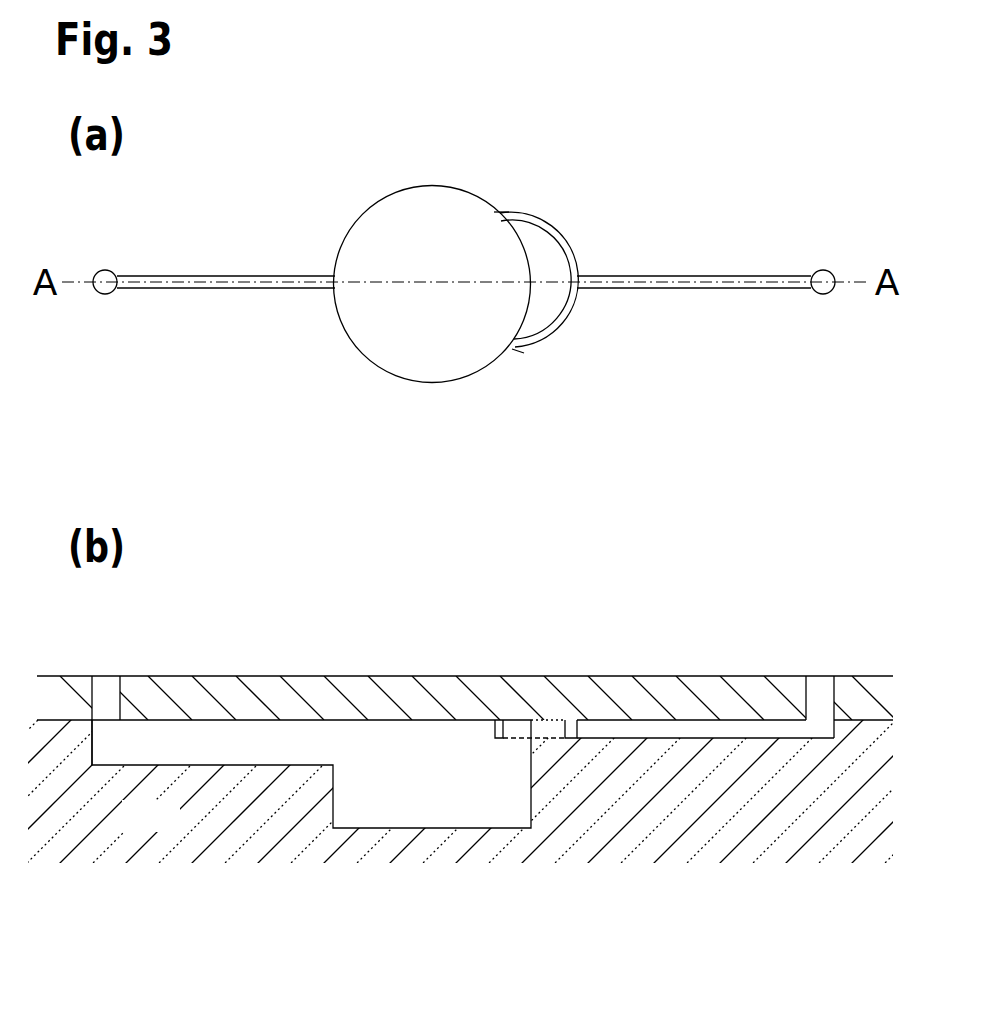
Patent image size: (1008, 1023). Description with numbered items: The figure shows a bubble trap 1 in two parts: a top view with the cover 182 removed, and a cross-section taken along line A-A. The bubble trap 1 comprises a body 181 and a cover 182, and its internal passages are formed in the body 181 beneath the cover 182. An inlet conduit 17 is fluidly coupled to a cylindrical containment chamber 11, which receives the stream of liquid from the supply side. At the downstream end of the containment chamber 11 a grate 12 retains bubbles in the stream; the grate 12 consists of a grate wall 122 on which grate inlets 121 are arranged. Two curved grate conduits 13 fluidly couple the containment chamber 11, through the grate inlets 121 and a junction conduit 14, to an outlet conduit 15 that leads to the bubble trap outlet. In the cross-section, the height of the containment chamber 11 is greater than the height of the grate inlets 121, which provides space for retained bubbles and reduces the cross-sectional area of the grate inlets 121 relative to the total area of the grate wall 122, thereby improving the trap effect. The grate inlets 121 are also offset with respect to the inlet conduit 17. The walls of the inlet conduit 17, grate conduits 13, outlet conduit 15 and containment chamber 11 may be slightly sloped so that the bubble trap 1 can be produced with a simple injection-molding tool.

The bubble trap 1 is at (680, 163).
The containment chamber 11 is at (412, 270).
The grate 12 is at (520, 300).
The grate inlets 121 is at (500, 210).
The grate wall 122 is at (520, 247).
The grate conduits 13 is at (542, 220).
The junction conduit 14 is at (578, 272).
The outlet conduit 15 is at (722, 283).
The inlet conduit 17 is at (227, 277).
The body 181 is at (183, 376).
The cover 182 is at (227, 683).